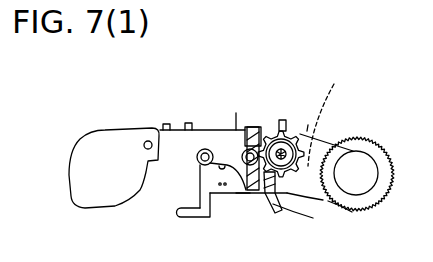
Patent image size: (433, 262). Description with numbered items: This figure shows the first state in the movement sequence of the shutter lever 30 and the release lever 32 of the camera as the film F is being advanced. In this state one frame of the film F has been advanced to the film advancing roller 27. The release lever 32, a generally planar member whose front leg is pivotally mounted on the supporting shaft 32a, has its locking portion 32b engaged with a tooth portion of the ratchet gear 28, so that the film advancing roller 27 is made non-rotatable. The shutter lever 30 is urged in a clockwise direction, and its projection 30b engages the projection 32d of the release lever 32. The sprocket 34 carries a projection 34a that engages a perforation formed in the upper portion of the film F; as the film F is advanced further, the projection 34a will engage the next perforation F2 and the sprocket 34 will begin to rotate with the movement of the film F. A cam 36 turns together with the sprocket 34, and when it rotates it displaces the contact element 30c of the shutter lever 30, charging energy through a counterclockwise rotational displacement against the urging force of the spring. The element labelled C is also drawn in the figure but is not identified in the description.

The cam / blade C is at (124, 128).
The film F is at (212, 130).
The next perforation F2 is at (187, 127).
The film advancing roller 27 is at (367, 209).
The ratchet gear 28 is at (372, 147).
The shutter lever 30 is at (292, 184).
The projection 30b is at (266, 204).
The contact element 30c is at (258, 130).
The release lever 32 is at (218, 197).
The supporting shaft 32a is at (197, 157).
The locking portion 32b is at (352, 212).
The projection 32d is at (246, 194).
The sprocket 34 is at (260, 130).
The projection 34a is at (283, 130).
The cam 36 is at (338, 119).